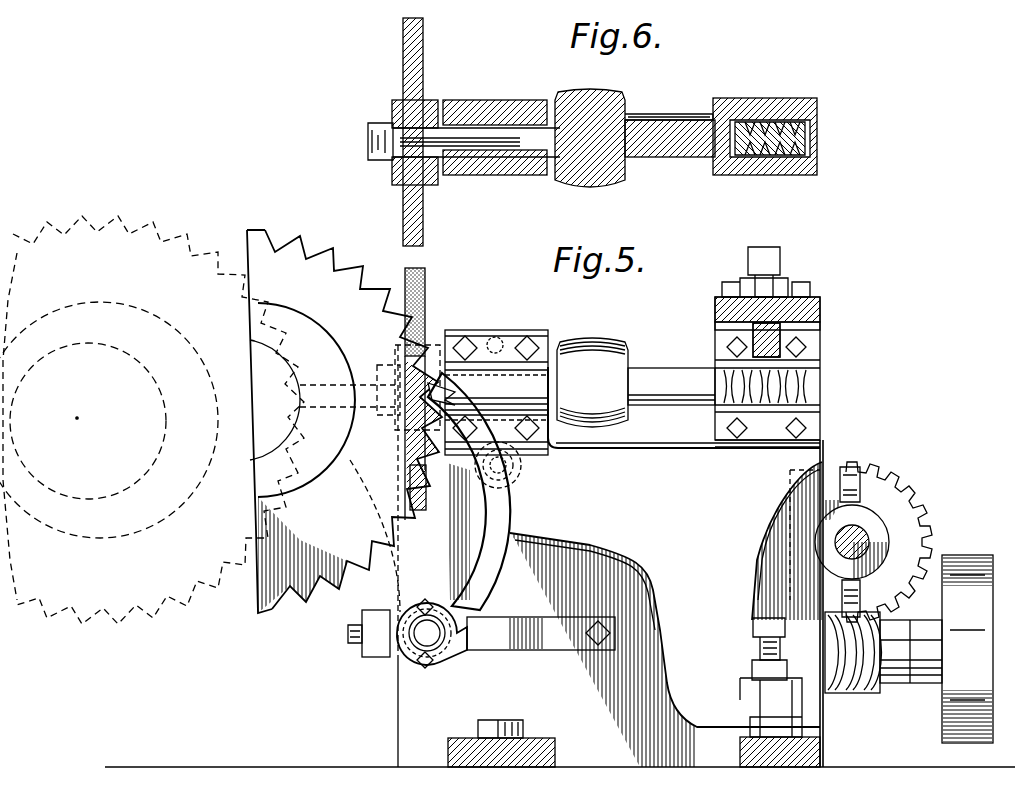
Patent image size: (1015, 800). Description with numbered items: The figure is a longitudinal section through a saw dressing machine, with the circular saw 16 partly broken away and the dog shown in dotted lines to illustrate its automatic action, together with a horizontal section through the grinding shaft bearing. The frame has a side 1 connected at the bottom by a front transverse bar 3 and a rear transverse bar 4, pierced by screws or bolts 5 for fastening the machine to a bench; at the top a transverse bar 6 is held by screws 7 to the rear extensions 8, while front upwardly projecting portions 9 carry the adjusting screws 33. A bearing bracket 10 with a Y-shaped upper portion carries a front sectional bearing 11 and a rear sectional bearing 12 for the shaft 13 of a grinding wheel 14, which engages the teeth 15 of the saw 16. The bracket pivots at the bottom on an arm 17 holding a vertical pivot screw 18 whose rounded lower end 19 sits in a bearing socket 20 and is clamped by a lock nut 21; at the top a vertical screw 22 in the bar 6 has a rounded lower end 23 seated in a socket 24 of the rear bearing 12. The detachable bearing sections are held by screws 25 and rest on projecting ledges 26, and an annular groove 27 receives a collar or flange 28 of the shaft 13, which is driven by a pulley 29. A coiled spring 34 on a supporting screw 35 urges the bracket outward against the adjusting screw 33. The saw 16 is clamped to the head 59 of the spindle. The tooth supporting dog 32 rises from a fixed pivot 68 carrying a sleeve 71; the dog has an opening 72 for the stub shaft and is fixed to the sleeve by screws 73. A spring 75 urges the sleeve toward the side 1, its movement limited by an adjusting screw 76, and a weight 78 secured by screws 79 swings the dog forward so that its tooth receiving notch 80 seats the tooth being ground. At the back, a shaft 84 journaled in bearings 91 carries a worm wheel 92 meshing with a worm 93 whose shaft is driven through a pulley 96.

In FIG. 5, the side 1 is at (609, 650).
In FIG. 5, the transverse bar 3 is at (470, 767).
In FIG. 5, the transverse bar 4 is at (735, 767).
In FIG. 5, the screws or bolts 5 is at (505, 700).
In FIG. 5, the transverse bar 6 is at (377, 385).
In FIG. 5, the screws 7 is at (722, 290).
In FIG. 5, the rear extensions 8 is at (347, 633).
In FIG. 5, the front upwardly projecting portions 9 is at (530, 332).
In FIG. 6, the bearing bracket 10 is at (665, 98).
In FIG. 5, the bearing bracket 10 is at (685, 567).
In FIG. 6, the front sectional bearing 11 is at (515, 175).
In FIG. 5, the front sectional bearing 11 is at (527, 387).
In FIG. 6, the rear sectional bearing 12 is at (812, 175).
In FIG. 5, the rear sectional bearing 12 is at (822, 372).
In FIG. 6, the shaft 13 is at (675, 157).
In FIG. 5, the shaft 13 is at (675, 358).
In FIG. 6, the grinding wheel 14 is at (425, 62).
In FIG. 5, the grinding wheel 14 is at (426, 290).
In FIG. 5, the teeth 15 is at (218, 272).
In FIG. 5, the circular saw 16 is at (344, 421).
In FIG. 5, the arm 17 is at (760, 692).
In FIG. 5, the lower vertical pivot screw 18 is at (753, 650).
In FIG. 5, the rounded lower end 19 is at (780, 760).
In FIG. 5, the bearing socket 20 is at (815, 755).
In FIG. 5, the lock nut 21 is at (752, 685).
In FIG. 5, the vertical screw 22 is at (775, 268).
In FIG. 5, the rounded lower end 23 is at (810, 347).
In FIG. 5, the socket 24 is at (728, 348).
In FIG. 5, the screws 25 is at (525, 345).
In FIG. 5, the projecting ledge 26 is at (552, 452).
In FIG. 6, the annular groove 27 is at (800, 98).
In FIG. 5, the annular groove 27 is at (738, 400).
In FIG. 6, the collar or flange 28 is at (762, 125).
In FIG. 5, the collar or flange 28 is at (820, 396).
In FIG. 6, the pulley 29 is at (590, 190).
In FIG. 5, the pulley 29 is at (600, 340).
In FIG. 5, the tooth supporting dog 32 is at (397, 492).
In FIG. 5, the adjusting screw 33 is at (480, 330).
In FIG. 5, the coiled spring 34 is at (525, 478).
In FIG. 5, the supporting screw 35 is at (495, 514).
In FIG. 5, the head 59 is at (262, 312).
In FIG. 5, the fixed pivot 68 is at (420, 640).
In FIG. 5, the sleeve 71 is at (420, 562).
In FIG. 5, the opening 72 is at (418, 645).
In FIG. 5, the screws 73 is at (432, 605).
In FIG. 5, the spring 75 is at (535, 650).
In FIG. 5, the adjusting screw 76 is at (478, 655).
In FIG. 5, the weight 78 is at (372, 645).
In FIG. 5, the screws 79 is at (350, 640).
In FIG. 5, the tooth receiving notch 80 is at (360, 395).
In FIG. 5, the shaft 84 is at (885, 540).
In FIG. 5, the bearing 91 is at (870, 525).
In FIG. 5, the worm wheel 92 is at (862, 470).
In FIG. 5, the worm 93 is at (865, 690).
In FIG. 5, the pulley 96 is at (965, 560).